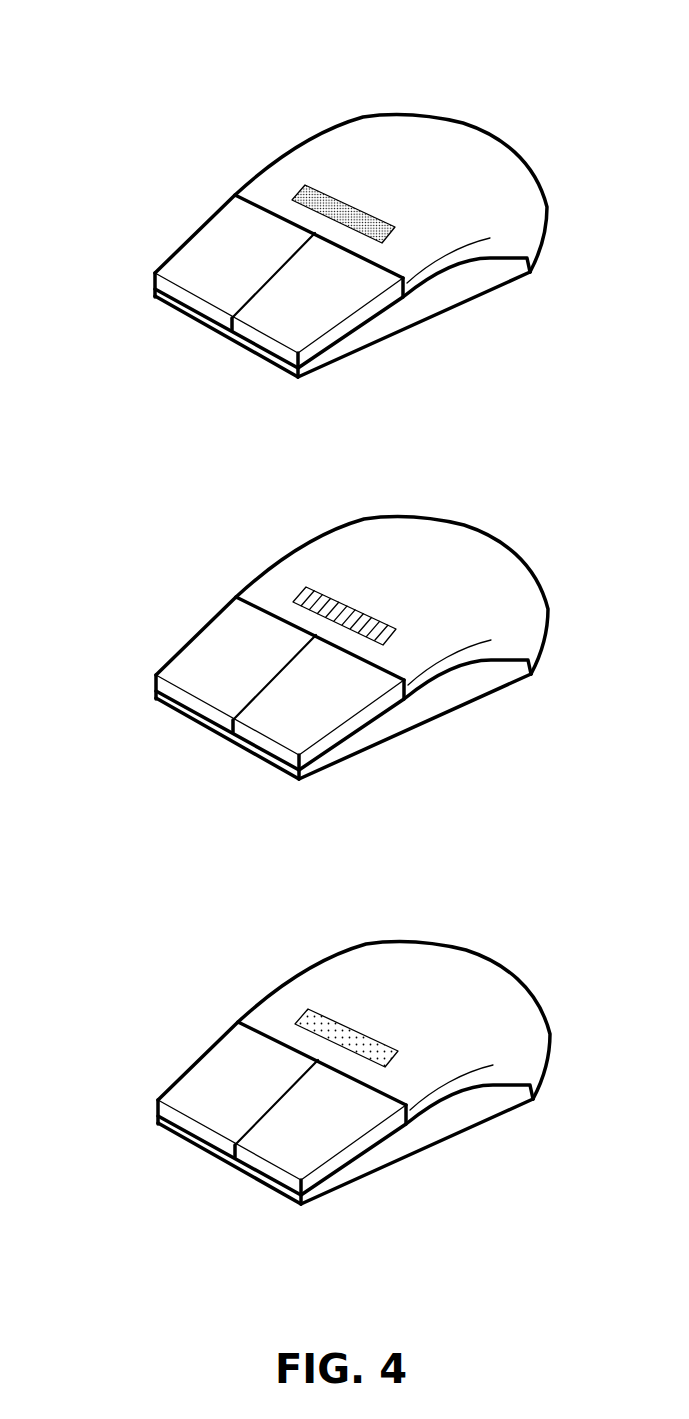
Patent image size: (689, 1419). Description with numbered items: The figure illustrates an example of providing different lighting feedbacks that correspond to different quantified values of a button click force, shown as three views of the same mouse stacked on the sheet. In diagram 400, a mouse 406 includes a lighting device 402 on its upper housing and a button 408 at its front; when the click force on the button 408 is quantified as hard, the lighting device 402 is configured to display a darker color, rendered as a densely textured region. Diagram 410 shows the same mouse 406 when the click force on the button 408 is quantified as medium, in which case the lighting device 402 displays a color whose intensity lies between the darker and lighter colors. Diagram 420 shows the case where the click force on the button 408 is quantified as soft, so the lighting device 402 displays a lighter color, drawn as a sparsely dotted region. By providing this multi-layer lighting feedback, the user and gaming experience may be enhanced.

The diagram 400 is at (123, 143).
The lighting device 402 is at (320, 188).
The mouse 406 is at (512, 147).
The button 408 is at (303, 332).
The diagram 410 is at (287, 639).
The diagram 420 is at (289, 1064).